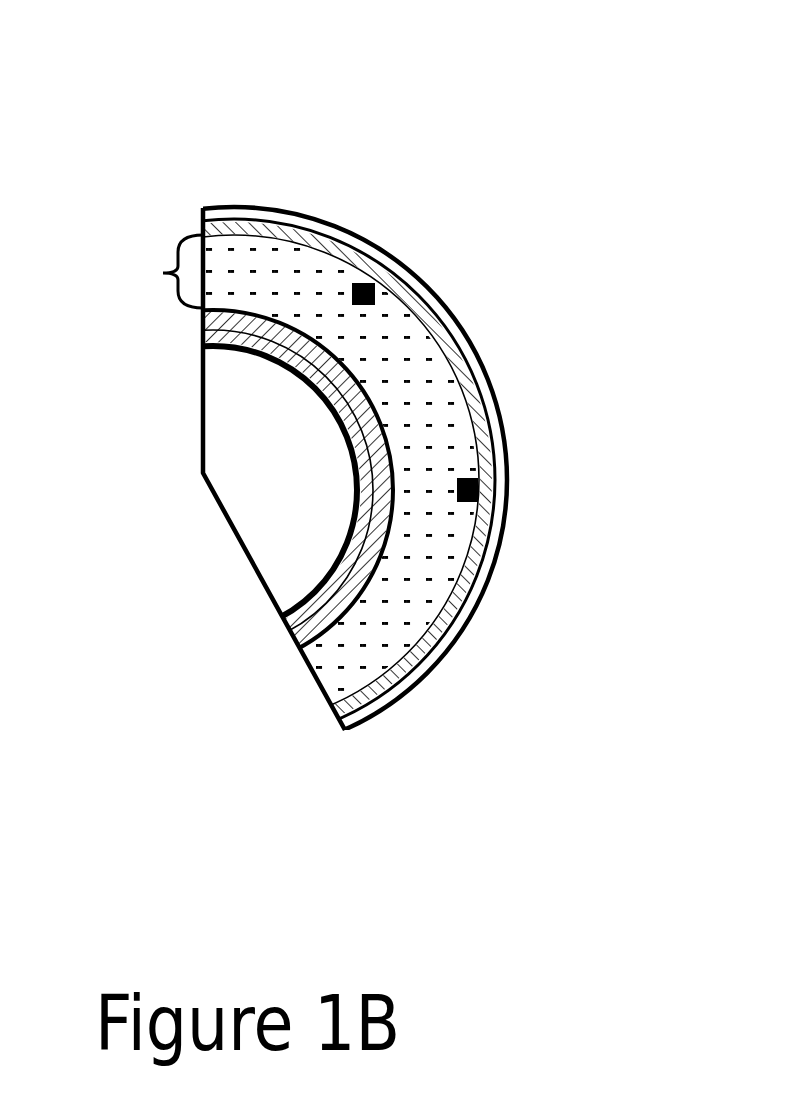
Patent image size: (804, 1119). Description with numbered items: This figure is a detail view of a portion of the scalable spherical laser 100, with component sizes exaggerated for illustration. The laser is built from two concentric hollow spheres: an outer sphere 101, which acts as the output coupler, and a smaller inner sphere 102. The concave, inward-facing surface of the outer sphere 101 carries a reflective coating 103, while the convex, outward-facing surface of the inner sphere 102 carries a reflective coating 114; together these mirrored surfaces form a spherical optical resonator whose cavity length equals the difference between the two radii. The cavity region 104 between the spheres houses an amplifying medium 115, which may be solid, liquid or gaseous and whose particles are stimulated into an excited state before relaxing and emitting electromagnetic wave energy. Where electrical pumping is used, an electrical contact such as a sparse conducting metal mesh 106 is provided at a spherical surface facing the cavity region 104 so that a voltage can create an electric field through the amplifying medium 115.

The scalable spherical laser 100 is at (582, 115).
The outer sphere 101 is at (488, 400).
The inner sphere 102 is at (213, 340).
The reflective coating 103 is at (205, 233).
The cavity region 104 is at (165, 273).
The sparse conducting metal mesh 106 is at (363, 294).
The reflective coating 114 is at (303, 618).
The amplifying medium 115 is at (400, 603).